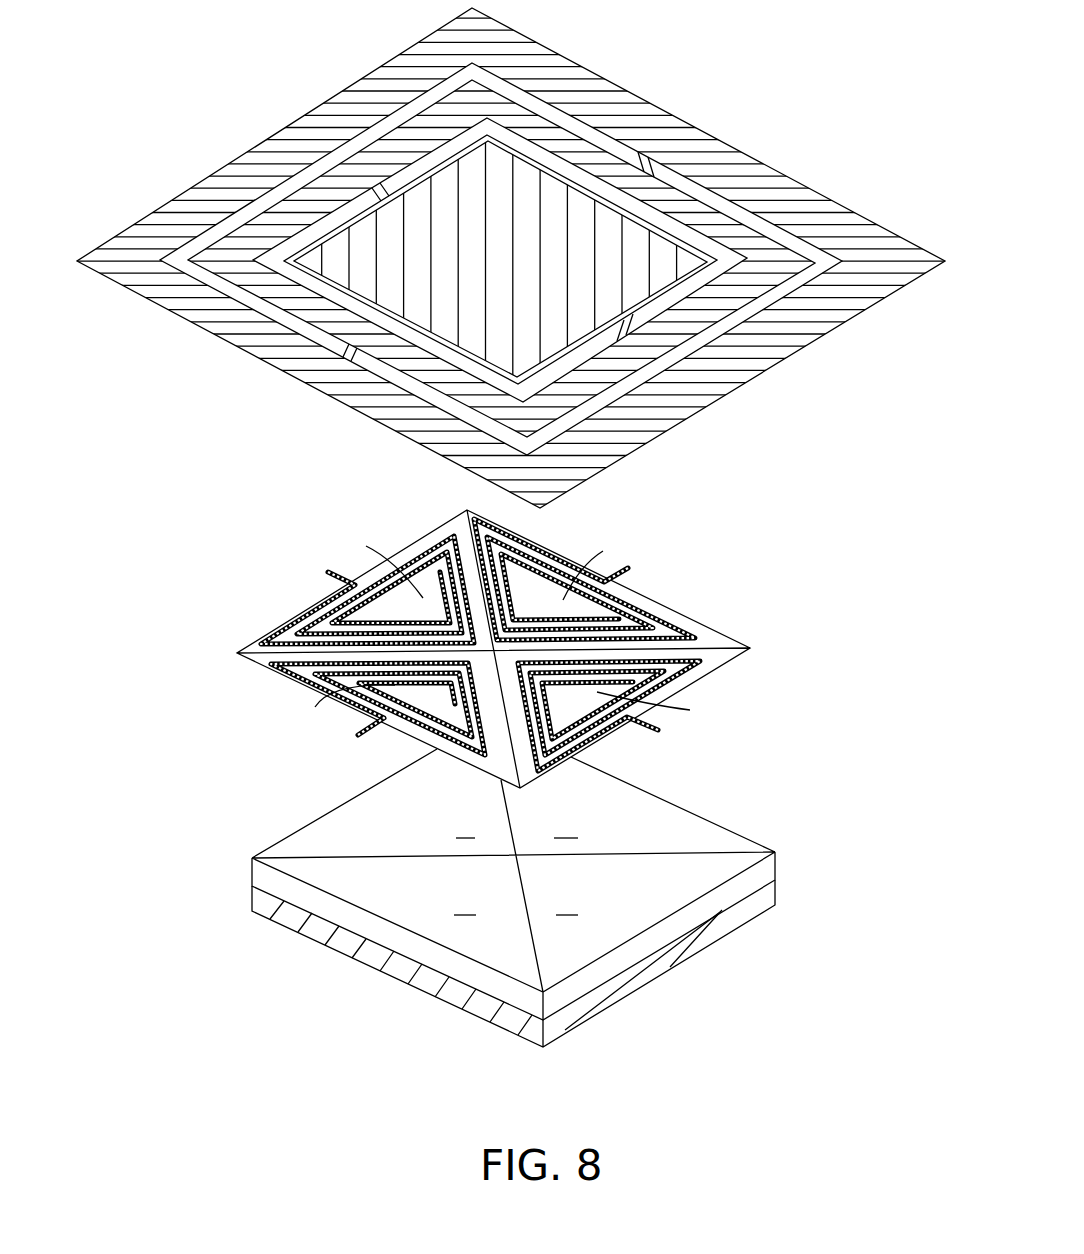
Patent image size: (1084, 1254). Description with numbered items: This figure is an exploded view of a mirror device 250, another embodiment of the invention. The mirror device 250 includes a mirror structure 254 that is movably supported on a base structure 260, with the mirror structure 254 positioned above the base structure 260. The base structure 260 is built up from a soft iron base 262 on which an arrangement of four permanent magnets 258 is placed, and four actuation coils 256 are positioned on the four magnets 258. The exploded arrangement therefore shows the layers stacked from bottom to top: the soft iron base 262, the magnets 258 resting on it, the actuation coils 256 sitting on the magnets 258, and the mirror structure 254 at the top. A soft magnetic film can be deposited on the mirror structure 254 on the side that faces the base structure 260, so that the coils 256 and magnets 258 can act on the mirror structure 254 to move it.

The mirror device 250 is at (510, 398).
The mirror structure 254 is at (663, 291).
The actuation coils 256 is at (700, 626).
The permanent magnets 258 is at (729, 832).
The base structure 260 is at (563, 805).
The soft iron base 262 is at (543, 944).